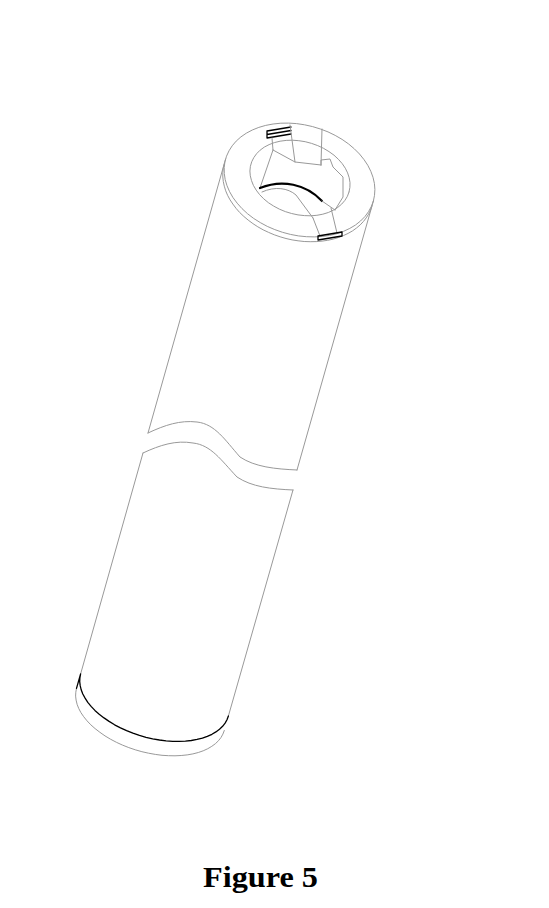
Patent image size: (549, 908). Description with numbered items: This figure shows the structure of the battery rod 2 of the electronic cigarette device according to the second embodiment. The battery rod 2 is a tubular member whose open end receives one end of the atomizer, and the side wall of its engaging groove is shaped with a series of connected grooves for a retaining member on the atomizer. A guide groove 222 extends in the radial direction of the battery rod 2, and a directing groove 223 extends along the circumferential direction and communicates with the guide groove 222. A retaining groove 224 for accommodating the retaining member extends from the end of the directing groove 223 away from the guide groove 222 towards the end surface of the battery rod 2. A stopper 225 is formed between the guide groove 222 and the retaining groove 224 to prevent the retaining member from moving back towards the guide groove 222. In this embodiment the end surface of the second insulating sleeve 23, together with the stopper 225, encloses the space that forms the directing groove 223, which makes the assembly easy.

The battery rod 2 is at (171, 319).
The second insulating sleeve 23 is at (332, 202).
The guide groove 222 is at (281, 143).
The directing groove 223 is at (289, 176).
The retaining groove 224 is at (339, 164).
The stopper 225 is at (311, 149).